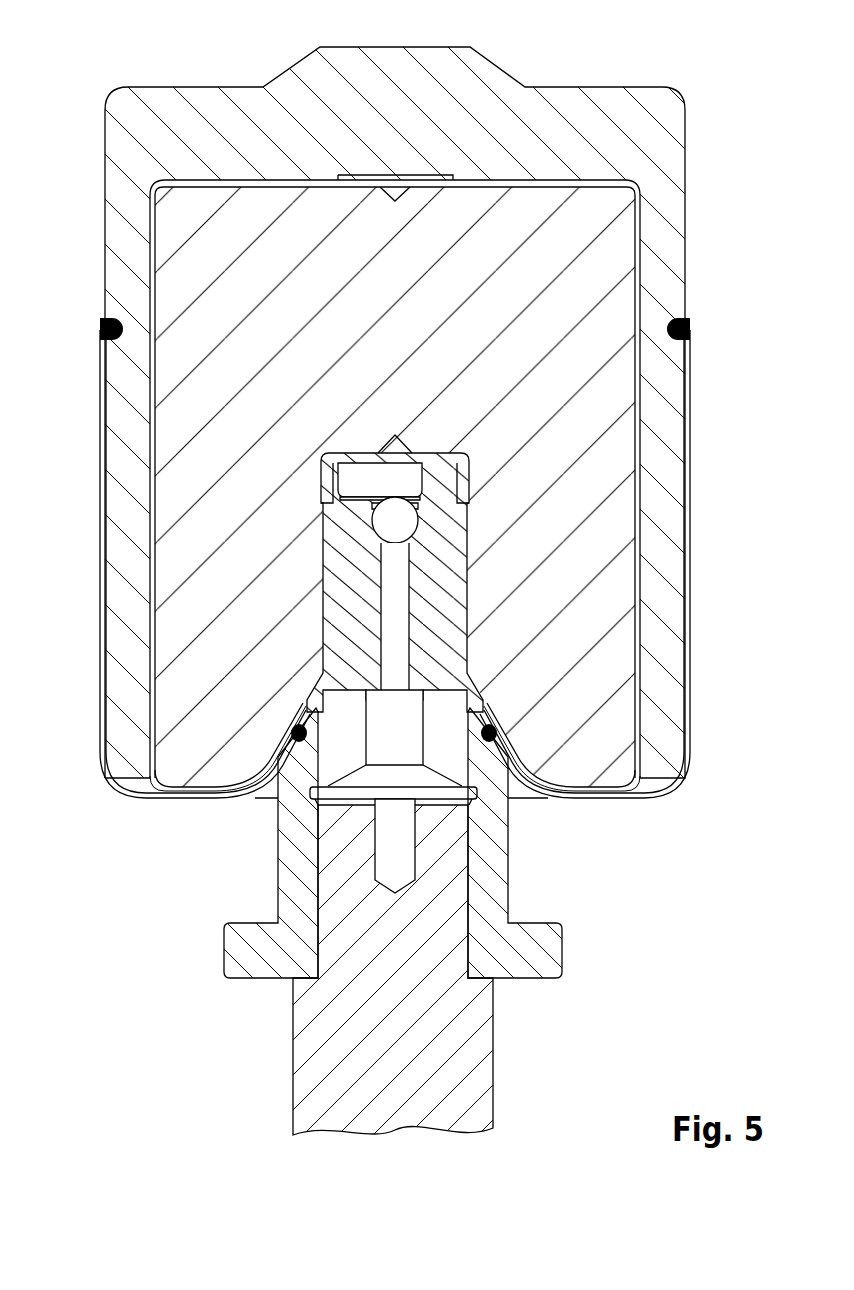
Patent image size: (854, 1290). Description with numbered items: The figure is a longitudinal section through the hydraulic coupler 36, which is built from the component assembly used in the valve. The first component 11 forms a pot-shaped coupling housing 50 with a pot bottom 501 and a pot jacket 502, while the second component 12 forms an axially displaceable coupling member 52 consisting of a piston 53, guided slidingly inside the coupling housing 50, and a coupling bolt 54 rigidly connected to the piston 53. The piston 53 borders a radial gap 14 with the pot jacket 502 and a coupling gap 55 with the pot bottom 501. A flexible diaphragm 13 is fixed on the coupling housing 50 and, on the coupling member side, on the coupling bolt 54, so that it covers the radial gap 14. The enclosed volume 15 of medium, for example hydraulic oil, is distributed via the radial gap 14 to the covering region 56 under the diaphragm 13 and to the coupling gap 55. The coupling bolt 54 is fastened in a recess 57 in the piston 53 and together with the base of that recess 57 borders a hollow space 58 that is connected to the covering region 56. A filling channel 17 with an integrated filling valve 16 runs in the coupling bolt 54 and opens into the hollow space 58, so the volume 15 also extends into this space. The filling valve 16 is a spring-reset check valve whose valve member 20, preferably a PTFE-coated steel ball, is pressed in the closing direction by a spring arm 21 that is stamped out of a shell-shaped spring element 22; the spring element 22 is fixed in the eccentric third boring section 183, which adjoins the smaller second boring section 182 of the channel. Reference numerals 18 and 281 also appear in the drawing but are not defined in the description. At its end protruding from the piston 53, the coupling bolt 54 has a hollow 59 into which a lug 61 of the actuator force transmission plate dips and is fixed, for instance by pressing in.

The hydraulic coupler 36 is at (116, 64).
The first component 11 is at (433, 406).
The coupling housing 50 is at (433, 406).
The pot bottom 501 is at (605, 103).
The pot jacket 502 is at (660, 288).
The coupling gap 55 is at (522, 185).
The piston 53 is at (612, 243).
The diaphragm 13 is at (645, 800).
The second component 12 is at (416, 589).
The coupling member 52 is at (416, 589).
The radial gap 14 is at (641, 703).
The volume 15 is at (658, 790).
The valve member 20 is at (389, 605).
The coupling bolt 54 is at (440, 632).
The recess 57 is at (469, 603).
The spring arm 21 is at (336, 462).
The spring element 22 is at (424, 481).
The third boring section 183 is at (342, 497).
The second boring section 182 is at (336, 518).
The filling valve 16 is at (372, 532).
The valve channel 18 is at (390, 621).
The opening 281 is at (392, 650).
The filling channel 17 is at (390, 673).
The hollow space 58 is at (445, 437).
The covering region 56 is at (600, 792).
The hollow 59 is at (316, 905).
The lug 61 is at (460, 1097).